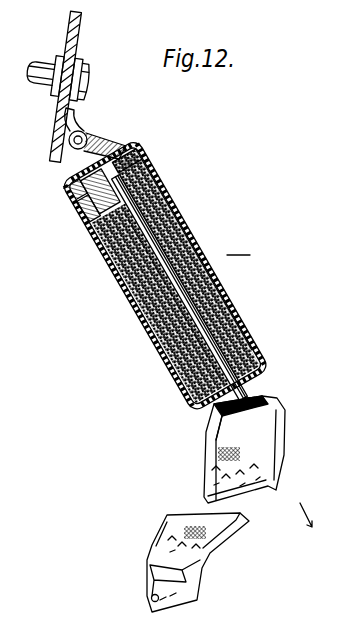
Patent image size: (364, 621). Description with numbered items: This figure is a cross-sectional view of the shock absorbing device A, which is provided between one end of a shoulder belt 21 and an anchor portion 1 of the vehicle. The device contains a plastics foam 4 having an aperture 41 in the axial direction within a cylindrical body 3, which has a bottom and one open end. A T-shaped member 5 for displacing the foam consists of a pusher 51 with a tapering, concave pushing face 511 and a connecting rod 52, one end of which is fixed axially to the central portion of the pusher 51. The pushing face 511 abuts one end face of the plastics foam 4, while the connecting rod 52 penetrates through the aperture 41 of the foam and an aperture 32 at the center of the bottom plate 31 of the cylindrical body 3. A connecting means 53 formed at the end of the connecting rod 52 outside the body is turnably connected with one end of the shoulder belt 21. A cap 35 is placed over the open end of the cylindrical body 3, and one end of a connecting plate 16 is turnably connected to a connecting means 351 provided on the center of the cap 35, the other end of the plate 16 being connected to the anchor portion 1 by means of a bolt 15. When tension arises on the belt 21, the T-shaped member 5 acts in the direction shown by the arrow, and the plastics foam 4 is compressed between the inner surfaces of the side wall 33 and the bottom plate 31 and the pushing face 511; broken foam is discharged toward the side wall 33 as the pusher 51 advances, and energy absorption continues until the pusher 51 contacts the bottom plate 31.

The anchor portion 1 is at (70, 38).
The connecting plate 16 is at (84, 52).
The bolt 15 is at (95, 78).
The connecting means 351 is at (90, 130).
The cap 35 is at (128, 148).
The cylindrical body 3 is at (165, 205).
The side wall 33 is at (188, 234).
The shock absorbing device A is at (238, 243).
The plastics foam 4 is at (150, 348).
The aperture 41 is at (170, 372).
The connecting rod 52 is at (144, 297).
The T-shaped member 5 is at (56, 186).
The pusher 51 is at (74, 218).
The pushing face 511 is at (98, 250).
The bottom plate 31 is at (282, 366).
The aperture 32 is at (206, 410).
The connecting means 53 is at (212, 456).
The shoulder belt 21 is at (226, 532).